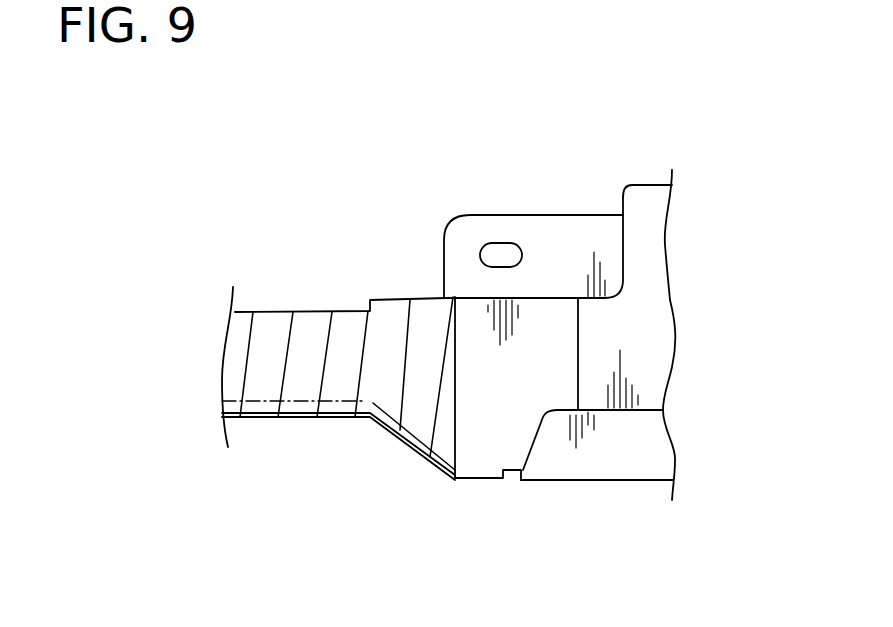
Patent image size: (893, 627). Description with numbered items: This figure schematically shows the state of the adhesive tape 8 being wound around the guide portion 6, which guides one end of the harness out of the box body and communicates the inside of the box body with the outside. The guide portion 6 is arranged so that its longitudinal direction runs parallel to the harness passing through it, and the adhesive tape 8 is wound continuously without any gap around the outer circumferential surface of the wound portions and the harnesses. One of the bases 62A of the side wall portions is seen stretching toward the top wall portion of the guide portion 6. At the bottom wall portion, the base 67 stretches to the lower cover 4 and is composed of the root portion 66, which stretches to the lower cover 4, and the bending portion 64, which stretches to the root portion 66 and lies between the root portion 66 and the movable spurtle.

The adhesive tape 8 is at (310, 311).
The base 62A is at (547, 365).
The guide portion 6 is at (575, 293).
The lower cover 4 is at (640, 347).
The bending portion 64 is at (480, 480).
The root portion 66 is at (578, 480).
The base 67 is at (583, 556).